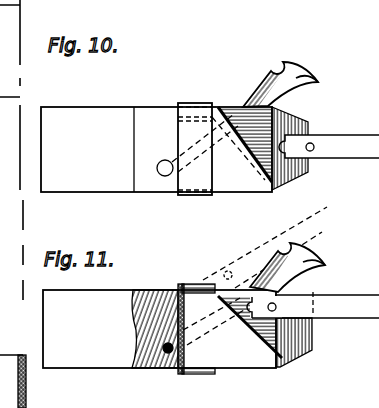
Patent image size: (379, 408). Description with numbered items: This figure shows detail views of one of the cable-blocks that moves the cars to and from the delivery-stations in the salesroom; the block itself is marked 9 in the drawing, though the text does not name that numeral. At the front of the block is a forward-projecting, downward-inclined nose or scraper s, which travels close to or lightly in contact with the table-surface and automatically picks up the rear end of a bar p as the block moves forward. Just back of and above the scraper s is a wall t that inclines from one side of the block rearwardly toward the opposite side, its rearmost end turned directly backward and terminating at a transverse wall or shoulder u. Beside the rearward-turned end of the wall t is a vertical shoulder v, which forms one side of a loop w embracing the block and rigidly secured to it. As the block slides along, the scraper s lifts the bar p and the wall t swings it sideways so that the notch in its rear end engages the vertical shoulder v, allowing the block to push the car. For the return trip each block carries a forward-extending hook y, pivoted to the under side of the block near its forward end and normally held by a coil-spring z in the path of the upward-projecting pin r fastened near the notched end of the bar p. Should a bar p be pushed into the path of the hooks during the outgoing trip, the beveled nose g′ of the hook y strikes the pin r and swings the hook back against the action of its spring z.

In FIG. 10, the block 9 is at (156, 149).
In FIG. 11, the block 9 is at (159, 329).
In FIG. 10, the vertical shoulder v is at (197, 107).
In FIG. 11, the vertical shoulder v is at (195, 285).
In FIG. 10, the loop w is at (198, 185).
In FIG. 11, the loop w is at (202, 372).
In FIG. 10, the nose or scraper s is at (308, 171).
In FIG. 11, the nose or scraper s is at (297, 352).
In FIG. 10, the bar p is at (361, 141).
In FIG. 11, the bar p is at (366, 302).
In FIG. 10, the beveled nose g′ is at (289, 62).
In FIG. 11, the beveled nose g′ is at (286, 264).
In FIG. 10, the hook y is at (307, 77).
In FIG. 11, the hook y is at (306, 265).
In FIG. 11, the coil-spring z is at (151, 348).
In FIG. 11, the transverse wall or shoulder u is at (184, 322).
In FIG. 11, the wall t is at (268, 352).
In FIG. 11, the pin r is at (277, 305).